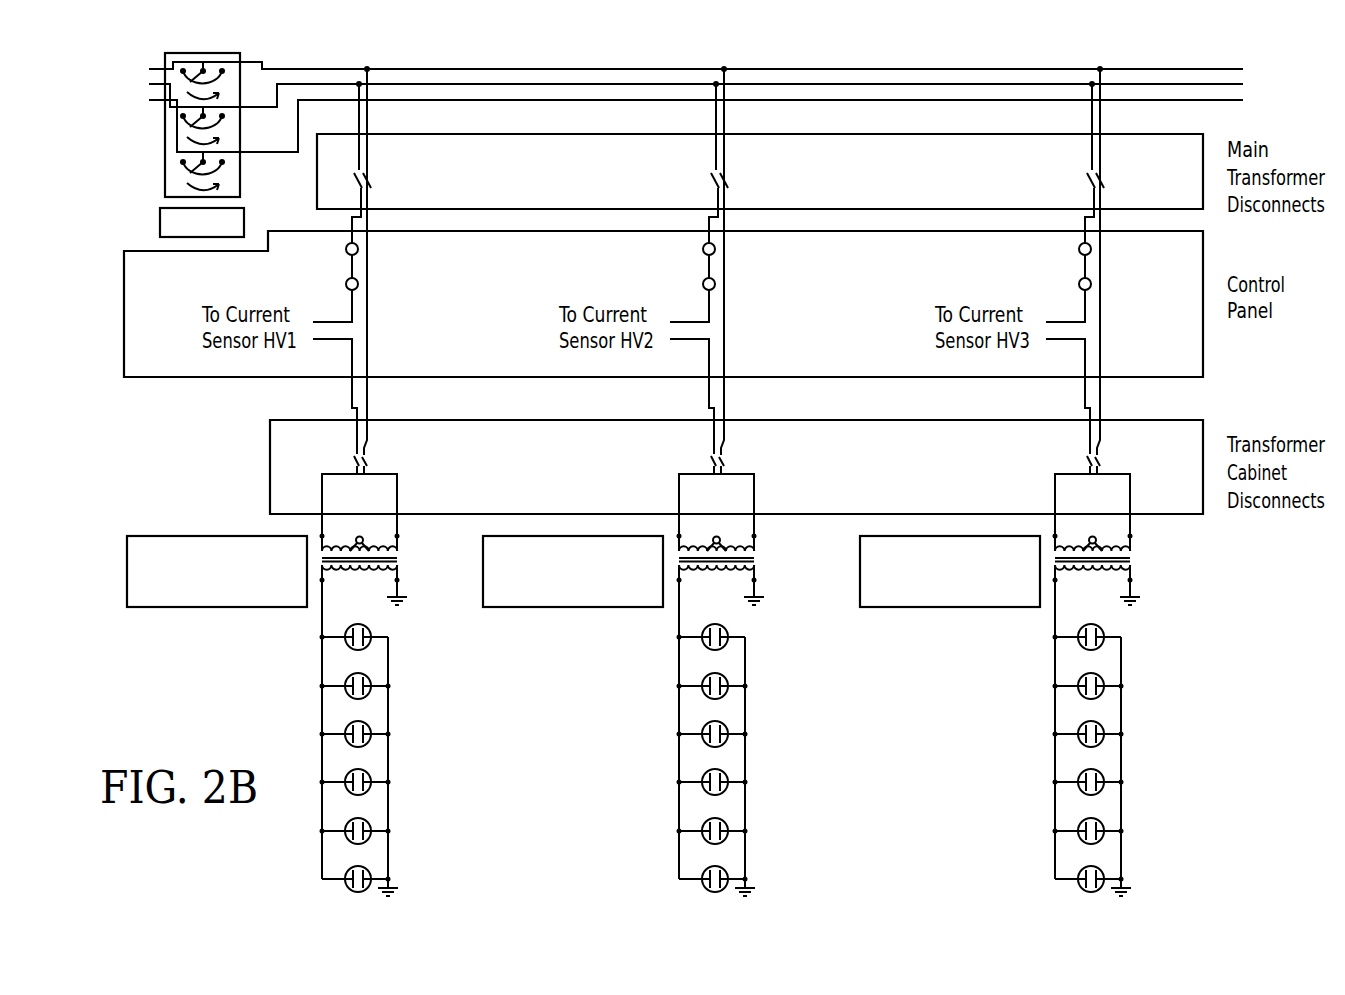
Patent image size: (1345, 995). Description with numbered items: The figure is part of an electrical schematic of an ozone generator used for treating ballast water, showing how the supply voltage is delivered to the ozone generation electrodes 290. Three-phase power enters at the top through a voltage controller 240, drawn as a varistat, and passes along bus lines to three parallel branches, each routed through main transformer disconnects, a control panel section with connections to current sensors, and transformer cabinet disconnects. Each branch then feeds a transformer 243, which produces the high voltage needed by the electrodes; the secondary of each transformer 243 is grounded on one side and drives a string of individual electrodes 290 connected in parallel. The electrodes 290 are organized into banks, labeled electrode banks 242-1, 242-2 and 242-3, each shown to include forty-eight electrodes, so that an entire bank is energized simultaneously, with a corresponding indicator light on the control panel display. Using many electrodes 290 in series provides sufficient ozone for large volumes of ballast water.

The voltage controller 240 is at (159, 225).
The transformer 243 is at (407, 559).
The ozone generation electrodes 290 is at (756, 738).
The electrode bank 242-1 is at (235, 607).
The electrode bank 242-2 is at (617, 608).
The electrode bank 242-3 is at (985, 608).